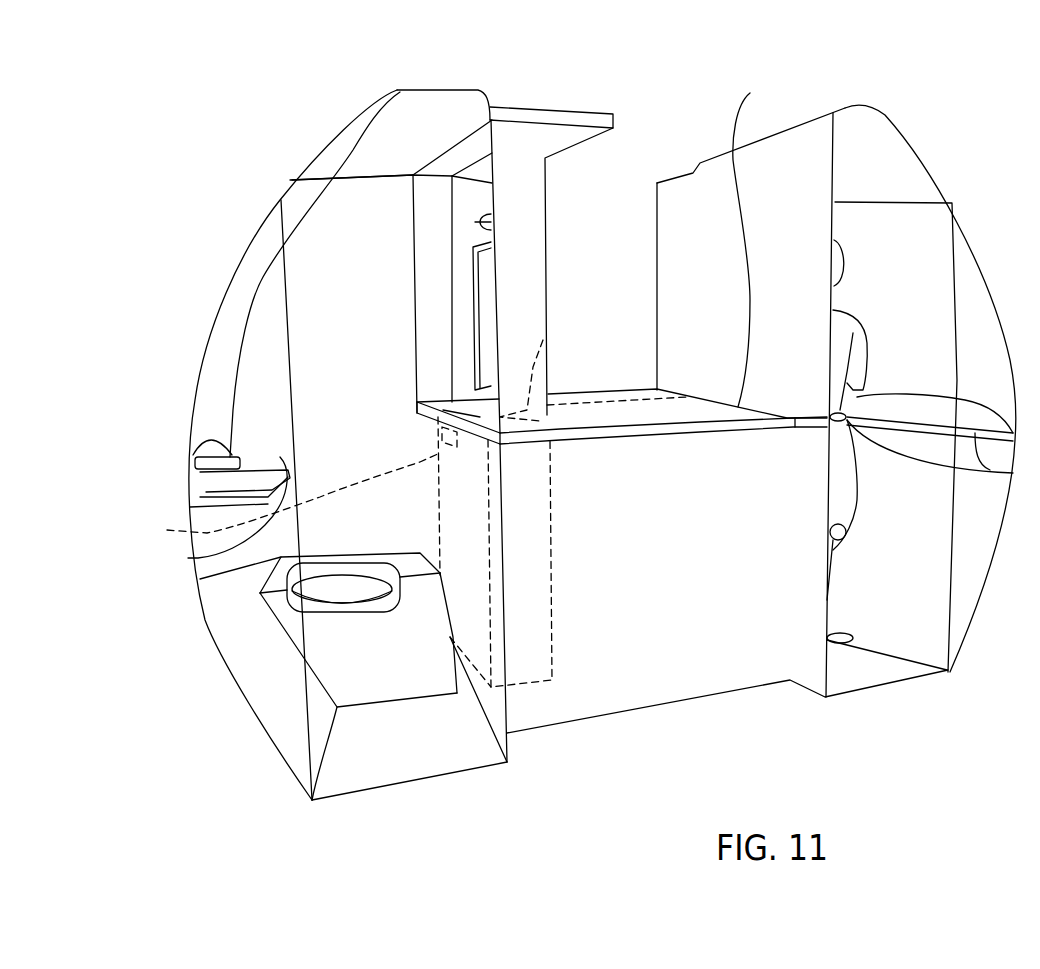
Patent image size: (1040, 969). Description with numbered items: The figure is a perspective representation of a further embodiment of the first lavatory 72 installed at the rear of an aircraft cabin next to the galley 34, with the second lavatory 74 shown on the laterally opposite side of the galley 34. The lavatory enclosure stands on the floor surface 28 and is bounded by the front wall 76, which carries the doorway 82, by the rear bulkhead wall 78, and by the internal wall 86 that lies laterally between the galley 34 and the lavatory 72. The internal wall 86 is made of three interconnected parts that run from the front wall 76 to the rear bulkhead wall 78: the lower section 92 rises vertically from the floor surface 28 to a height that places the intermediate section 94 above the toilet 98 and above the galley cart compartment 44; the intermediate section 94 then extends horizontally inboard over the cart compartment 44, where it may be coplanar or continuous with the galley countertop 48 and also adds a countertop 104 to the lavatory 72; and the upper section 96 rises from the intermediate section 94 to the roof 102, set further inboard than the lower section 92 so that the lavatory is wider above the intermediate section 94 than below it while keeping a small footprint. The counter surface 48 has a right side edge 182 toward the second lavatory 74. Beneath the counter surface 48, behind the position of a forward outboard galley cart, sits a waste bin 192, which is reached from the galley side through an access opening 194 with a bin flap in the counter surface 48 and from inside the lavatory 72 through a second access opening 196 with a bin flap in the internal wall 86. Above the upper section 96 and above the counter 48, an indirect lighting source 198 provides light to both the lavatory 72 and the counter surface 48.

The floor surface 28 is at (453, 765).
The galley 34 is at (636, 158).
The galley cart compartment 44 is at (803, 719).
The countertop 48 is at (590, 397).
The first lavatory 72 is at (316, 215).
The second lavatory 74 is at (938, 242).
The front wall 76 is at (254, 367).
The rear bulkhead wall 78 is at (350, 203).
The doorway 82 is at (281, 263).
The internal wall 86 is at (487, 720).
The lower section 92 is at (480, 706).
The intermediate section 94 is at (450, 407).
The upper section 96 is at (467, 363).
The toilet 98 is at (330, 583).
The roof 102 is at (440, 107).
The countertop 104 is at (200, 485).
The right side edge 182 is at (750, 93).
The waste bin 192 is at (552, 642).
The access opening 194 is at (543, 340).
The second access opening 196 is at (292, 496).
The indirect lighting source 198 is at (575, 108).